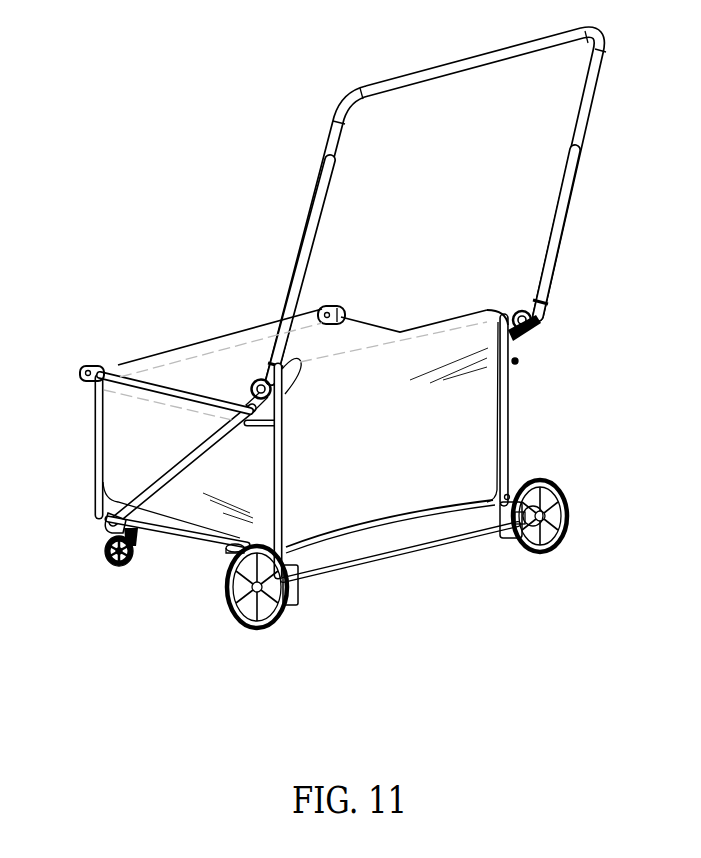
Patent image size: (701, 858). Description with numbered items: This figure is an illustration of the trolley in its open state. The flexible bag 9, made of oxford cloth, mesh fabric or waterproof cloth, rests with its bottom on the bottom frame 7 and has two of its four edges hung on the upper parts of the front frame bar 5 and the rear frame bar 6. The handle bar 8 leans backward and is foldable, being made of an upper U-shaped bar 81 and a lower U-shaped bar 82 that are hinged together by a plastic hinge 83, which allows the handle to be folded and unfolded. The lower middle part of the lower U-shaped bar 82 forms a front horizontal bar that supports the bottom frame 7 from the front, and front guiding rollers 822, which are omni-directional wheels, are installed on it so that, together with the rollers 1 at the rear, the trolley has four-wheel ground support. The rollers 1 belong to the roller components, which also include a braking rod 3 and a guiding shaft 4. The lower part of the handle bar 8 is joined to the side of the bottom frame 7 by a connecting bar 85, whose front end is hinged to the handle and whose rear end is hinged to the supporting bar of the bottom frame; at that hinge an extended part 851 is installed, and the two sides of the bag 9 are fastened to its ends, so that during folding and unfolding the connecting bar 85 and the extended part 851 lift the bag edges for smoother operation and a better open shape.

The roller 1 is at (565, 503).
The braking rod 3 is at (520, 505).
The guiding shaft 4 is at (345, 575).
The front frame bar 5 is at (116, 365).
The rear frame bar 6 is at (510, 452).
The bottom frame 7 is at (365, 537).
The handle bar 8 is at (308, 188).
The upper U-shaped bar 81 is at (292, 292).
The lower U-shaped bar 82 is at (148, 492).
The plastic hinge 83 is at (547, 327).
The connecting bar 85 is at (185, 541).
The front guiding roller 822 is at (102, 559).
The extended part 851 is at (232, 555).
The bag 9 is at (222, 374).